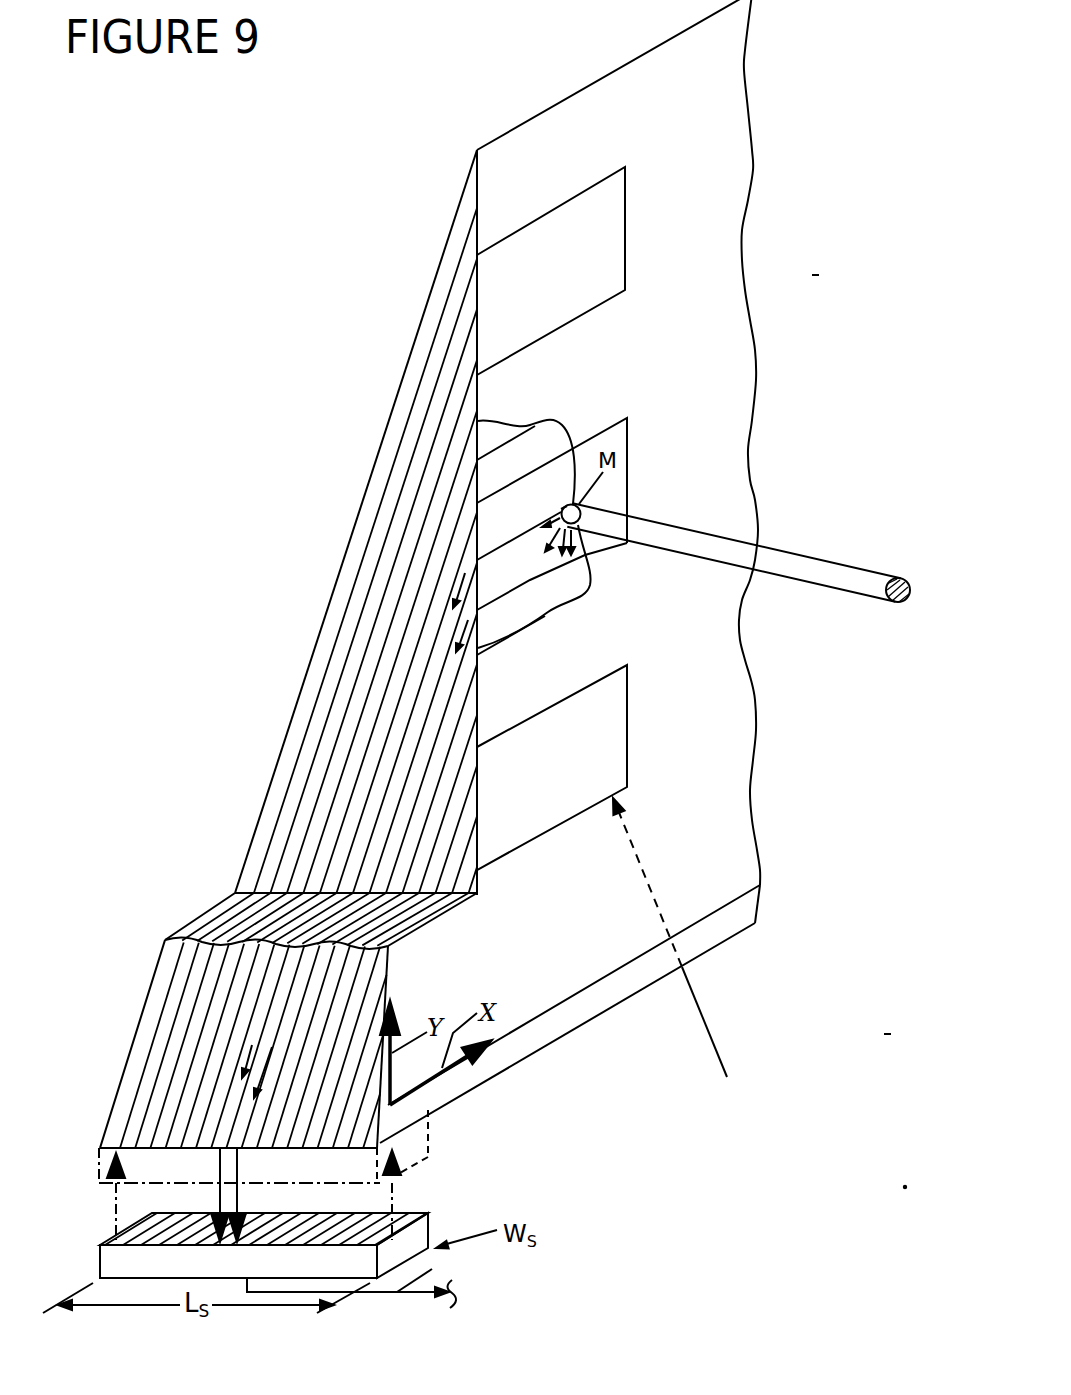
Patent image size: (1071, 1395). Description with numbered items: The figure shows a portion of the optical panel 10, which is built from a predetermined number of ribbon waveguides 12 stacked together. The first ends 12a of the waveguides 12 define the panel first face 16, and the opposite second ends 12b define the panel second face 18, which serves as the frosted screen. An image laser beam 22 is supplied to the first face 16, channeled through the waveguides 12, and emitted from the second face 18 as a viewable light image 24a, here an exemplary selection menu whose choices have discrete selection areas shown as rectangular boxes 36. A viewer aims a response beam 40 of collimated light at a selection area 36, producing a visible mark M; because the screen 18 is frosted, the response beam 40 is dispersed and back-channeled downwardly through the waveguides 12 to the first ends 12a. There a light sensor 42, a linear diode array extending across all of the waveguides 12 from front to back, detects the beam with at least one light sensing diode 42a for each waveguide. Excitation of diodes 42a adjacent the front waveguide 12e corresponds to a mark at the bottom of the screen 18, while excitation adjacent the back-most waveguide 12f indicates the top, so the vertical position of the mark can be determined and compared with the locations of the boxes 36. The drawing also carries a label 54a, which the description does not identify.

The optical panel 10 is at (540, 94).
The ribbon waveguides 12 is at (368, 533).
The first ends 12a is at (135, 1148).
The second ends 12b is at (477, 203).
The front waveguide 12e is at (420, 1102).
The back-most waveguide 12f is at (105, 1137).
The panel first face 16 is at (594, 1032).
The panel second face 18 is at (708, 72).
The image laser beam 22 is at (653, 895).
The viewable light image 24a is at (641, 405).
The selection area 36 is at (602, 432).
The response beam 40 is at (840, 564).
The light sensor 42 is at (436, 1230).
The light sensing diode 42a is at (285, 1234).
The support base 54a is at (432, 1270).